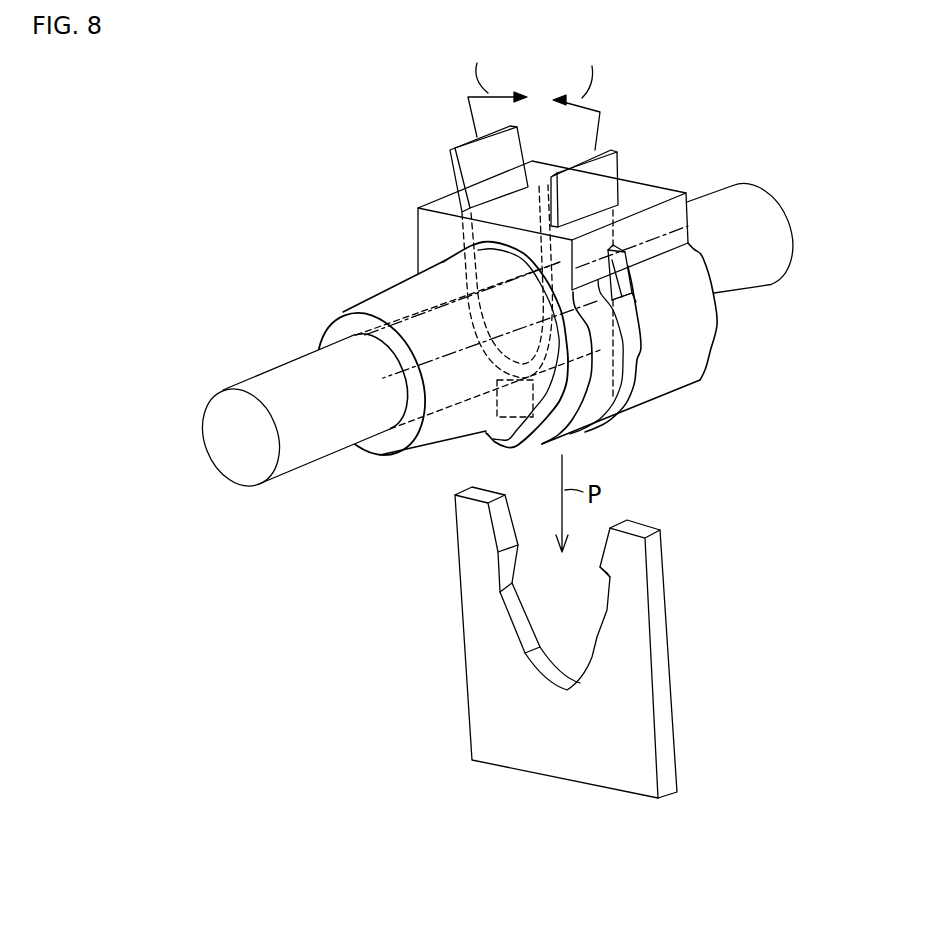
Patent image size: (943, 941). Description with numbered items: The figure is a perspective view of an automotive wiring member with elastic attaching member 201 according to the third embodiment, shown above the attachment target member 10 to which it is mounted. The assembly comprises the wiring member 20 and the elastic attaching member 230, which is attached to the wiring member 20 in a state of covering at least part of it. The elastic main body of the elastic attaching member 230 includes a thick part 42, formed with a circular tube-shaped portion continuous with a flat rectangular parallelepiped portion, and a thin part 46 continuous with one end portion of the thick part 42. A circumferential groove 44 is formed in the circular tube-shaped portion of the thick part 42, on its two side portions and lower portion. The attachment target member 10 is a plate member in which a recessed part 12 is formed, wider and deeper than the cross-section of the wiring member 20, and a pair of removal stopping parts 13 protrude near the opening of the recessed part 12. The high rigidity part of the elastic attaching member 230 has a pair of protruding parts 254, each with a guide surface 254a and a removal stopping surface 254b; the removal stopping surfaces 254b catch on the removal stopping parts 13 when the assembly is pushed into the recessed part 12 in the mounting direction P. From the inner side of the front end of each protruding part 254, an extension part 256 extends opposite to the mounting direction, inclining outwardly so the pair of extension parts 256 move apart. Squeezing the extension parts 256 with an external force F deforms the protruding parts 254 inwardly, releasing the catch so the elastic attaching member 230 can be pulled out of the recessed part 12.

The automotive wiring member with elastic attaching member 201 is at (354, 186).
The wiring member 20 is at (255, 376).
The thin part 46 is at (351, 310).
The thick part 42 is at (662, 375).
The circumferential groove 44 is at (623, 392).
The elastic attaching member 230 is at (684, 191).
The extension part 256 is at (455, 148).
The protruding part 254 is at (635, 295).
The guide surface 254a is at (640, 308).
The removal stopping surface 254b is at (638, 280).
The attachment target member 10 is at (670, 633).
The recessed part 12 is at (583, 657).
The removal stopping part 13 is at (522, 546).